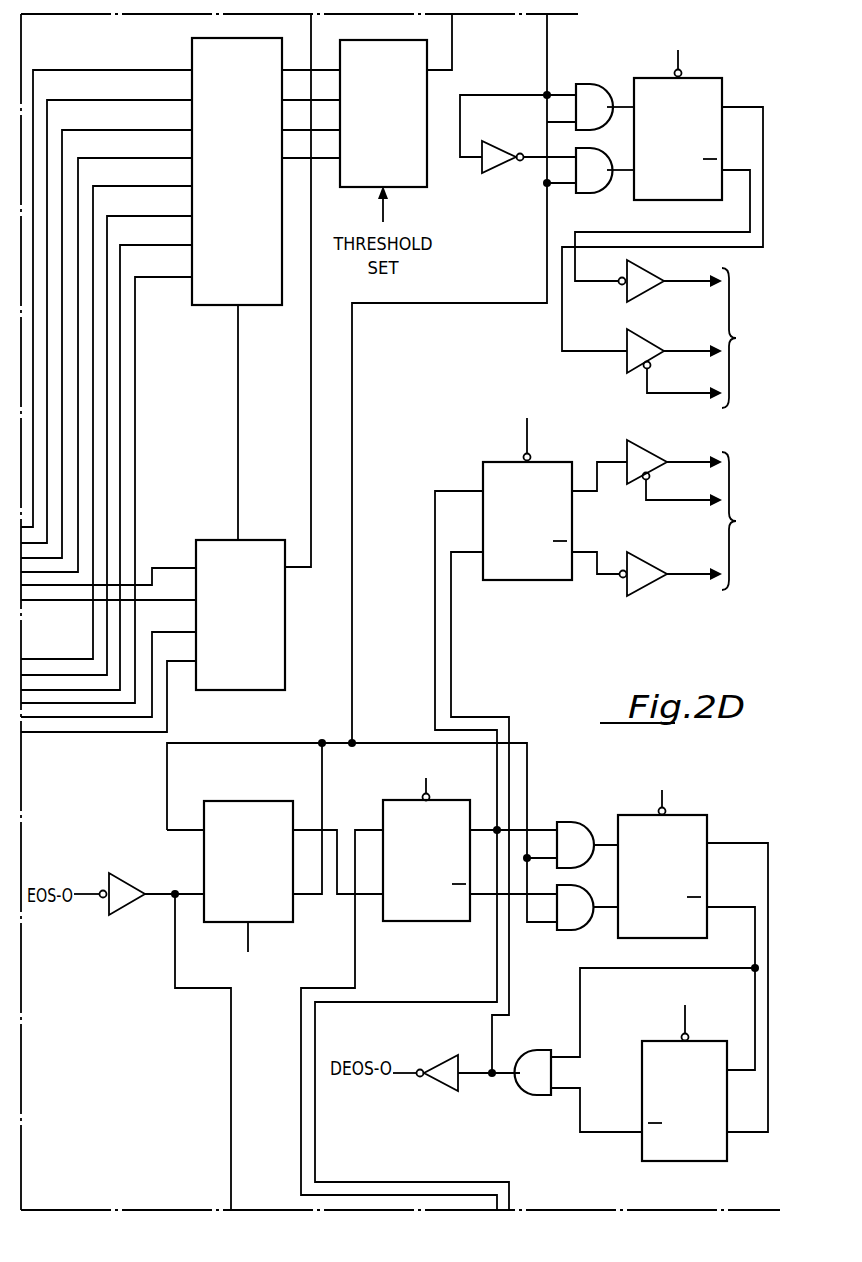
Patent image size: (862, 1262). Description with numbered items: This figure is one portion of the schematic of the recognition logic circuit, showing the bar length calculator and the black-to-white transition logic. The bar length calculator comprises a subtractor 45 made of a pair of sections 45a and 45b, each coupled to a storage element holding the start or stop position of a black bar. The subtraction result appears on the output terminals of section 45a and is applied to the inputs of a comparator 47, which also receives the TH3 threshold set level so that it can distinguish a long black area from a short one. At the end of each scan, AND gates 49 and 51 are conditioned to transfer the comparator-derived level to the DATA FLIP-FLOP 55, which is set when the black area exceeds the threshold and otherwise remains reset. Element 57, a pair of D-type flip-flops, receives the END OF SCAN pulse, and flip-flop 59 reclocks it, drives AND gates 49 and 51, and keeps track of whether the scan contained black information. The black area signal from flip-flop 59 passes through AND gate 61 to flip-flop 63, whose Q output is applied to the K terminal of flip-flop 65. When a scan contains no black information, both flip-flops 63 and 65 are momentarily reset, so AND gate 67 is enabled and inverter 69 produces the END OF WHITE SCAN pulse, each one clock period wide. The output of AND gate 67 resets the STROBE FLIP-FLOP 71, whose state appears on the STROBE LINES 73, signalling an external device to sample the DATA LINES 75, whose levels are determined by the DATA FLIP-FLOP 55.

The subtractor 45 is at (209, 362).
The subtractor section 45a is at (192, 58).
The subtractor section 45b is at (208, 548).
The comparator 47 is at (427, 183).
The AND gate 49 is at (588, 84).
The AND gate 51 is at (593, 186).
The DATA FLIP-FLOP 55 is at (724, 78).
The pair of D-type flip-flops 57 is at (257, 801).
The flip-flop 59 is at (389, 803).
The AND gate 61 is at (569, 830).
The flip-flop 63 is at (697, 823).
The flip-flop 65 is at (693, 1157).
The AND gate 67 is at (537, 1089).
The inverter 69 is at (445, 1088).
The STROBE FLIP-FLOP 71 is at (487, 472).
The STROBE LINES 73 is at (676, 518).
The DATA LINES 75 is at (670, 257).